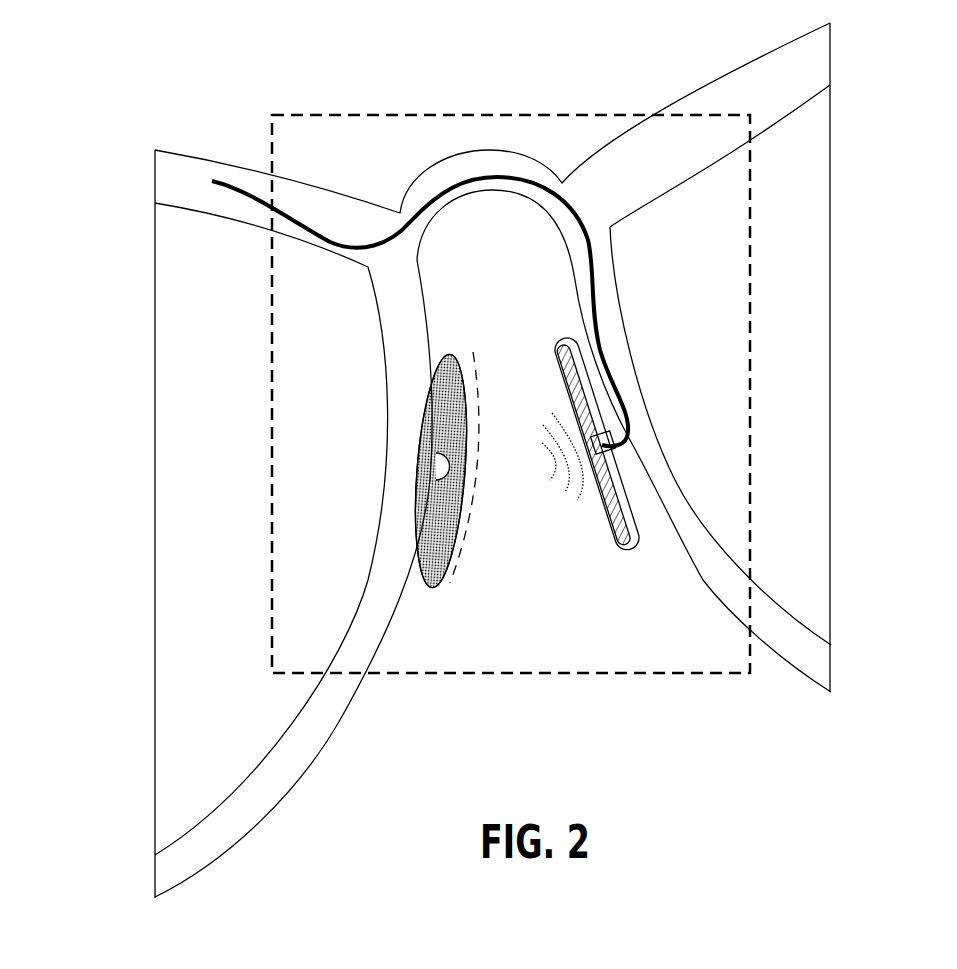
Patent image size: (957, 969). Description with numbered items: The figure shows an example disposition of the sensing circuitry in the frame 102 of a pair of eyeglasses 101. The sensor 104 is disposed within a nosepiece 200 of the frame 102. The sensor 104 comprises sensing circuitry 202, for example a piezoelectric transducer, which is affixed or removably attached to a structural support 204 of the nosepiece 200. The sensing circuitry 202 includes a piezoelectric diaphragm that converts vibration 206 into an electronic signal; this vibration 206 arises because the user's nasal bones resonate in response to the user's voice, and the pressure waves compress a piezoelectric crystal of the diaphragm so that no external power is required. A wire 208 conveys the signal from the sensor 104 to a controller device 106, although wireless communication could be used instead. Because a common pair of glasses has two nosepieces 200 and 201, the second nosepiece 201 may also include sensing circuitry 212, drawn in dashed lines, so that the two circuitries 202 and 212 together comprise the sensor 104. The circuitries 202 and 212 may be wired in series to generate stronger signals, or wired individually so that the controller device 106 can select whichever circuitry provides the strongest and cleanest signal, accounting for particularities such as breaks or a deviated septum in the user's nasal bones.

The eyeglasses 101 is at (852, 354).
The frame 102 is at (355, 703).
The sensor 104 is at (885, 237).
The controller device 106 is at (139, 181).
The nosepiece 200 is at (588, 466).
The nosepiece 201 is at (484, 487).
The sensing circuitry 202 is at (578, 570).
The structural support 204 is at (686, 599).
The vibration 206 is at (538, 476).
The wire 208 is at (690, 286).
The sensing circuitry 212 is at (471, 353).